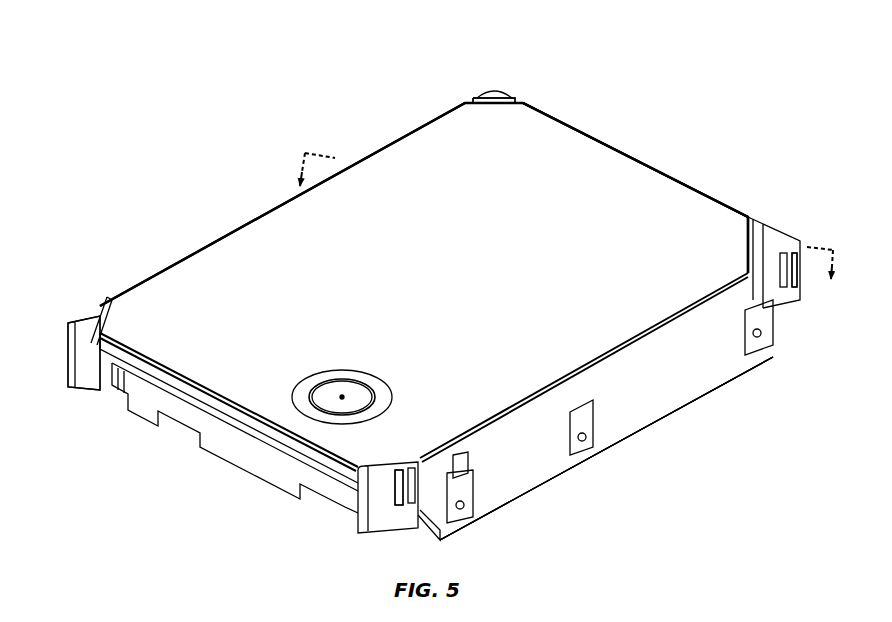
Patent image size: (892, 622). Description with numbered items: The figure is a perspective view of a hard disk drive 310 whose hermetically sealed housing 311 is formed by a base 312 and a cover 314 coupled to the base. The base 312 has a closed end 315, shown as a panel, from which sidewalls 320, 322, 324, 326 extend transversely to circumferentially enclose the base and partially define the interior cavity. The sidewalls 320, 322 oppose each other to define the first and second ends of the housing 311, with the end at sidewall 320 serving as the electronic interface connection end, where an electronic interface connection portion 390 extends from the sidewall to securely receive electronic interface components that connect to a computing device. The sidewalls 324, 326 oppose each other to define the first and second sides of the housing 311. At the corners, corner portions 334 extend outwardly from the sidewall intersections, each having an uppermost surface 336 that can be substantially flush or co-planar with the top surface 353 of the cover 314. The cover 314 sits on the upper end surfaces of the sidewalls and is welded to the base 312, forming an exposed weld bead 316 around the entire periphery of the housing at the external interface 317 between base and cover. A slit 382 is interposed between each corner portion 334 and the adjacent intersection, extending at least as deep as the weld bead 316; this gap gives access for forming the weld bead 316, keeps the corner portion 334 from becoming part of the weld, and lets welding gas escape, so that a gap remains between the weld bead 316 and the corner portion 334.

The hard disk drive 310 is at (652, 85).
The housing 311 is at (594, 466).
The base 312 is at (715, 393).
The cover 314 is at (417, 150).
The closed end 315 is at (667, 414).
The weld bead 316 is at (110, 305).
The external interface 317 is at (258, 419).
The sidewall 320 is at (228, 410).
The sidewall 322 is at (672, 175).
The sidewall 324 is at (521, 465).
The sidewall 326 is at (82, 322).
The corner portion 334 is at (509, 93).
The uppermost surface 336 is at (492, 96).
The top surface 353 is at (580, 187).
The slit 382 is at (527, 101).
The electronic interface connection portion 390 is at (263, 488).